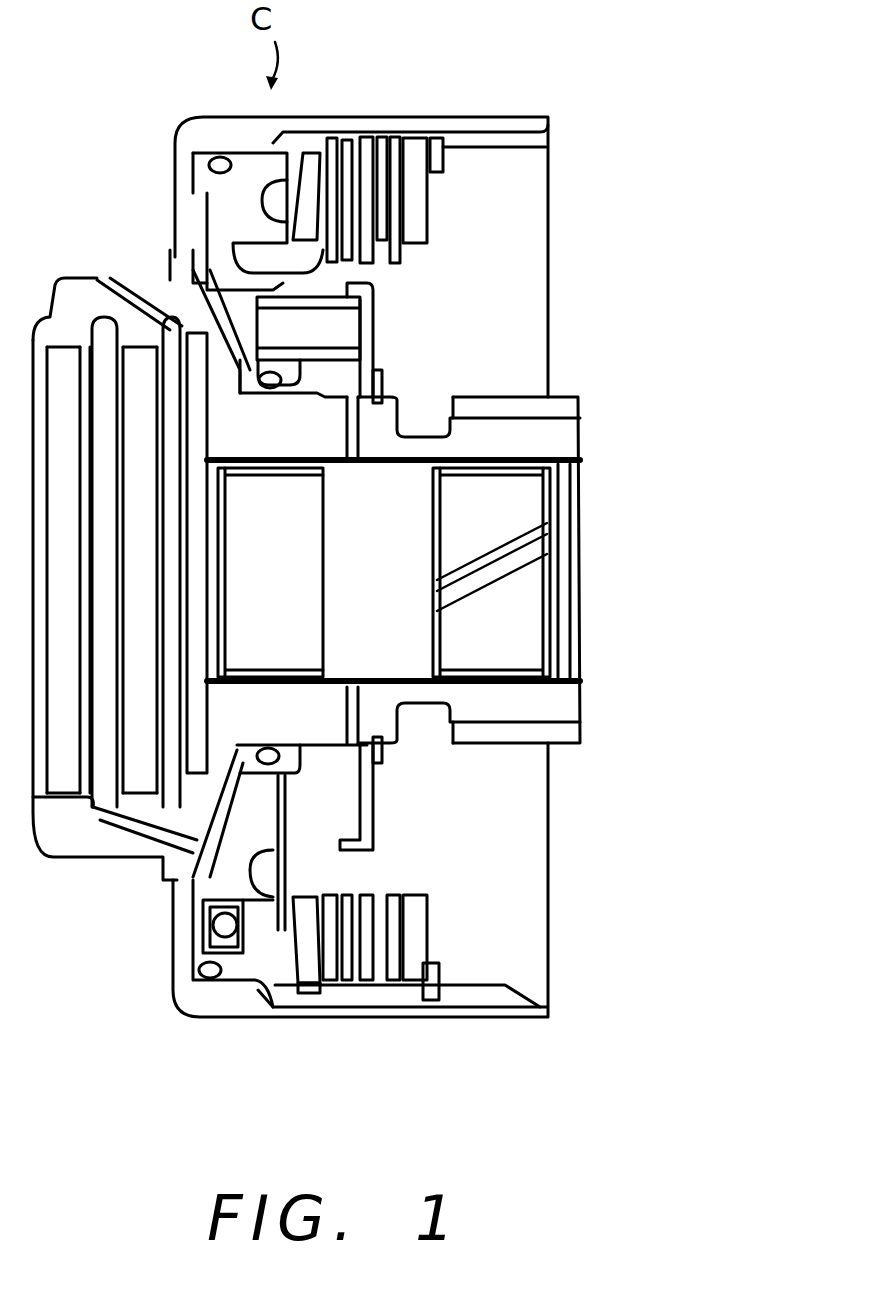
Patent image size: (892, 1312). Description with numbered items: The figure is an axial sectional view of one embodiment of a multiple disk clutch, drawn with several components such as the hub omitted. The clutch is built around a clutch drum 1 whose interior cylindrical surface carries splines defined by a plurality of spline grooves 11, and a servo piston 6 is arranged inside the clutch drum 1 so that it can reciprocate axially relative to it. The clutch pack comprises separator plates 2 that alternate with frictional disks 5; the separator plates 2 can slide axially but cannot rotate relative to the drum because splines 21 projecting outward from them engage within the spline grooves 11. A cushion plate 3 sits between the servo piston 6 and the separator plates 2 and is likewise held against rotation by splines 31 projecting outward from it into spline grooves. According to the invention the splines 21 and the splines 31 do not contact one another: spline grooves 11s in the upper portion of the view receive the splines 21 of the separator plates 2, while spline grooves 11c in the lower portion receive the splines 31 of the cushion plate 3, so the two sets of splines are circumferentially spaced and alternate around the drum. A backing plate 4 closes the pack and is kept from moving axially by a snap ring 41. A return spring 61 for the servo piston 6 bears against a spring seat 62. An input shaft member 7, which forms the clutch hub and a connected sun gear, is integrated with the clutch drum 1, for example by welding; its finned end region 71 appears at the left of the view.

The clutch drum 1 is at (178, 124).
The spline grooves 11 is at (514, 146).
The spline grooves 11s is at (494, 141).
The spline grooves 11c is at (470, 978).
The separator plates 2 is at (315, 254).
The splines 21 is at (330, 134).
The return spring 61 is at (322, 318).
The spring seat 62 is at (375, 297).
The input shaft member 7 is at (592, 434).
The rotor with fins 71 is at (133, 820).
The servo piston 6 is at (285, 795).
The frictional disks 5 is at (368, 793).
The cushion plate 3 is at (302, 882).
The splines 31 is at (310, 993).
The backing plate 4 is at (428, 905).
The snap ring 41 is at (436, 990).